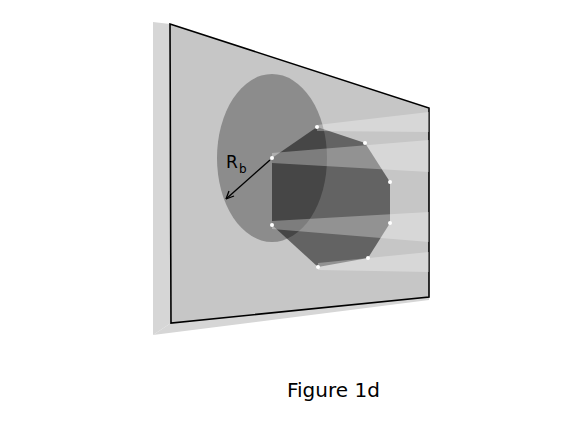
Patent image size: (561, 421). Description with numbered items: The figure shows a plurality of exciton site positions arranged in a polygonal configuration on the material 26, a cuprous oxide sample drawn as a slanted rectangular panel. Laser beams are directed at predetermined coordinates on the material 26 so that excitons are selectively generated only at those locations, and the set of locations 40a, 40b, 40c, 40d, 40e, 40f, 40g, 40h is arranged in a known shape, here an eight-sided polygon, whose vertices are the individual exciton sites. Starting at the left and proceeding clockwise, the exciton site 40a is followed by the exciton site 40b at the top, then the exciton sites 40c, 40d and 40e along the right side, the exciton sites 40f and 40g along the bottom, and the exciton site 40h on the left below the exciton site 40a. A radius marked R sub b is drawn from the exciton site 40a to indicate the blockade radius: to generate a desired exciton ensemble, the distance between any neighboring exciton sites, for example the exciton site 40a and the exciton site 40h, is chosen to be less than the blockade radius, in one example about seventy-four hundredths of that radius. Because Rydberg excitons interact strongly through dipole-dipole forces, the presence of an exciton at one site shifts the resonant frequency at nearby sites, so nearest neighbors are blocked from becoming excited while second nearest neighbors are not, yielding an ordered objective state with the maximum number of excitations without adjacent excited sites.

The material 26 is at (185, 82).
The exciton site 40a is at (260, 144).
The exciton site 40b is at (332, 115).
The exciton site 40c is at (384, 151).
The exciton site 40d is at (411, 193).
The exciton site 40e is at (411, 233).
The exciton site 40f is at (385, 265).
The exciton site 40g is at (324, 283).
The exciton site 40h is at (260, 242).